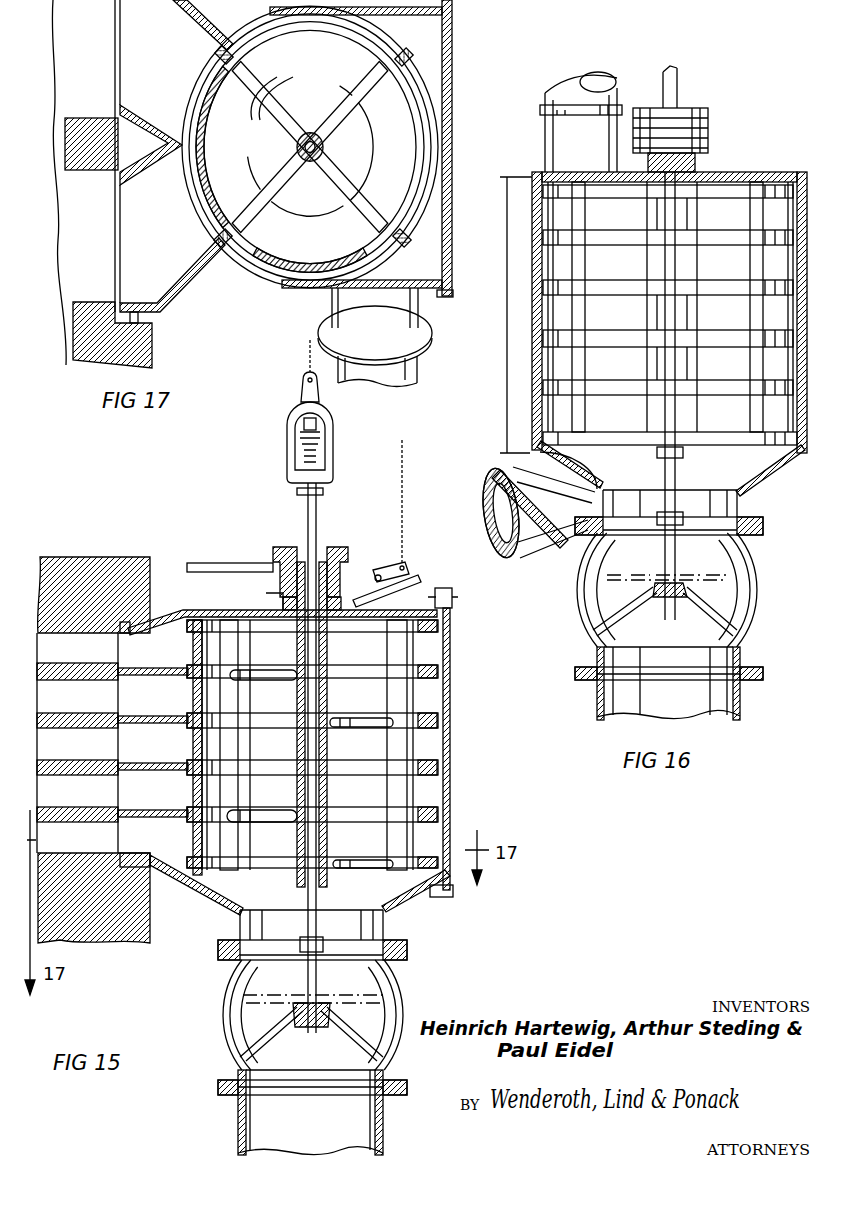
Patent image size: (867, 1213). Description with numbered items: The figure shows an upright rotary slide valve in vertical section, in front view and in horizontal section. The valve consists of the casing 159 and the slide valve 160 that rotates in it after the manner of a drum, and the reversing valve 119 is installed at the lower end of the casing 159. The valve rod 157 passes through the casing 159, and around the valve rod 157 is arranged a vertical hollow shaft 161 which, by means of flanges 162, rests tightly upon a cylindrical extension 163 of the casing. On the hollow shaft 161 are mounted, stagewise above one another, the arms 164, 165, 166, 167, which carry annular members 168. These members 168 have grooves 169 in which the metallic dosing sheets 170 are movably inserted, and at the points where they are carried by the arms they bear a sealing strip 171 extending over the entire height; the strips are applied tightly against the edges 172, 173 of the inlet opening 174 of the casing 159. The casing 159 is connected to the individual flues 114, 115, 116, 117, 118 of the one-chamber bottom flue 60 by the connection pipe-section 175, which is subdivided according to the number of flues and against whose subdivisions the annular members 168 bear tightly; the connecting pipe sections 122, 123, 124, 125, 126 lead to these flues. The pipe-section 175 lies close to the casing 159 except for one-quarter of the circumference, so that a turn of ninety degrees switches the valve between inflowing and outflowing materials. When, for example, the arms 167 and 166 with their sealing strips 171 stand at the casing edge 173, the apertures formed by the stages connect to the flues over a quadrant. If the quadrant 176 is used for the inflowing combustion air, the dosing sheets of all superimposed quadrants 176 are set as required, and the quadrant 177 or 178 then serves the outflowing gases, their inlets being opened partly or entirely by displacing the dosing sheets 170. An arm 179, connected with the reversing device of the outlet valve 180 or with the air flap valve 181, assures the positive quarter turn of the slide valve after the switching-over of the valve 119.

In FIG. 15, the one-chamber bottom flue 60 is at (90, 853).
In FIG. 15, the individual flue 114 is at (94, 848).
In FIG. 15, the individual flue 115 is at (76, 800).
In FIG. 15, the individual flue 116 is at (96, 755).
In FIG. 15, the individual flue 117 is at (84, 708).
In FIG. 15, the individual flue 118 is at (84, 660).
In FIG. 16, the reversing valve 119 is at (669, 605).
In FIG. 15, the reversing valve 119 is at (403, 982).
In FIG. 15, the connecting pipe section 122 is at (168, 848).
In FIG. 15, the connecting pipe section 123 is at (163, 800).
In FIG. 15, the connecting pipe section 124 is at (166, 755).
In FIG. 15, the connecting pipe section 125 is at (163, 710).
In FIG. 15, the connecting pipe section 126 is at (163, 665).
In FIG. 16, the valve rod 157 is at (678, 81).
In FIG. 15, the valve rod 157 is at (317, 512).
In FIG. 16, the casing 159 is at (513, 420).
In FIG. 15, the casing 159 is at (413, 904).
In FIG. 16, the slide valve 160 is at (670, 438).
In FIG. 15, the slide valve 160 is at (368, 871).
In FIG. 16, the vertical hollow shaft 161 is at (683, 214).
In FIG. 15, the vertical hollow shaft 161 is at (327, 745).
In FIG. 16, the flange 162 is at (708, 128).
In FIG. 15, the flange 162 is at (350, 563).
In FIG. 16, the cylindrical extension 163 is at (710, 148).
In FIG. 15, the cylindrical extension 163 is at (283, 594).
In FIG. 17, the arm 164 is at (283, 181).
In FIG. 17, the arm 165 is at (362, 204).
In FIG. 17, the arm 166 is at (370, 101).
In FIG. 15, the arm 166 is at (370, 718).
In FIG. 17, the arm 167 is at (267, 90).
In FIG. 15, the arm 167 is at (277, 676).
In FIG. 17, the annular member 168 is at (190, 181).
In FIG. 15, the annular member 168 is at (422, 667).
In FIG. 17, the groove 169 is at (243, 246).
In FIG. 15, the groove 169 is at (203, 803).
In FIG. 17, the metallic dosing sheet 170 is at (205, 124).
In FIG. 16, the metallic dosing sheet 170 is at (647, 212).
In FIG. 15, the metallic dosing sheet 170 is at (203, 848).
In FIG. 17, the sealing strip 171 is at (405, 52).
In FIG. 16, the sealing strip 171 is at (590, 266).
In FIG. 15, the sealing strip 171 is at (240, 651).
In FIG. 17, the edge of inlet opening 172 is at (214, 239).
In FIG. 17, the edge of inlet opening 173 is at (213, 47).
In FIG. 17, the inlet opening 174 is at (174, 84).
In FIG. 15, the connection pipe-section 175 is at (163, 617).
In FIG. 17, the quadrant 176 is at (267, 159).
In FIG. 17, the quadrant 177 is at (337, 94).
In FIG. 17, the quadrant 178 is at (320, 232).
In FIG. 15, the arm 179 is at (250, 563).
In FIG. 17, the outlet valve 180 is at (363, 162).
In FIG. 16, the outlet valve 180 is at (665, 609).
In FIG. 15, the outlet valve 180 is at (311, 999).
In FIG. 15, the air flap valve 181 is at (417, 577).